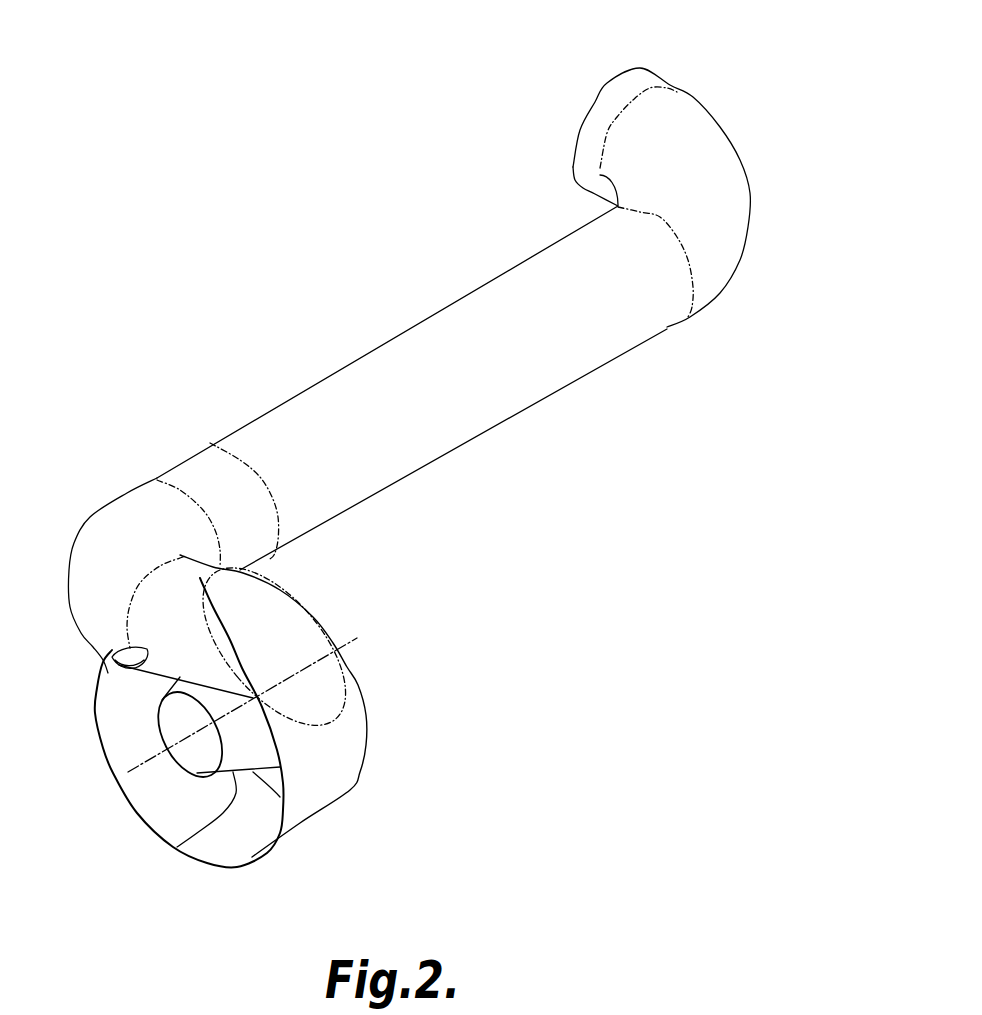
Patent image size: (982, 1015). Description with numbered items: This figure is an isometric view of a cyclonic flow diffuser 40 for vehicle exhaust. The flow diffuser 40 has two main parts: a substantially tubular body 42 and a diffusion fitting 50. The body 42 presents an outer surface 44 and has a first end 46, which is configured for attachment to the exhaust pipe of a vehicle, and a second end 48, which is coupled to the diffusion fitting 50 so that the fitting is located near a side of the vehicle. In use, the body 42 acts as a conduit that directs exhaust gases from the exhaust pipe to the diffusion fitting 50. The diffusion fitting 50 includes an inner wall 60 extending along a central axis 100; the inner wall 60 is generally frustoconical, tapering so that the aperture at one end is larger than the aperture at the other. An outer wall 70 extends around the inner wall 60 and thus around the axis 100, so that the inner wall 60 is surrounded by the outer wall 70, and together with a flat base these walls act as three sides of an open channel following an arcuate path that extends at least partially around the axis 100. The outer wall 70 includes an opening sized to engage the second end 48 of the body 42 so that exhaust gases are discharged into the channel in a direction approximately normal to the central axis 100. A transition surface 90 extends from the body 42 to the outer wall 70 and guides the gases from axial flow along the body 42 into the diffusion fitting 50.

The cyclonic flow diffuser 40 is at (258, 252).
The tubular body 42 is at (412, 388).
The outer surface 44 is at (513, 285).
The first end 46 is at (613, 87).
The second end 48 is at (183, 462).
The diffusion fitting 50 is at (375, 713).
The inner wall 60 is at (177, 847).
The outer wall 70 is at (303, 807).
The transition surface 90 is at (162, 628).
The central axis 100 is at (138, 772).